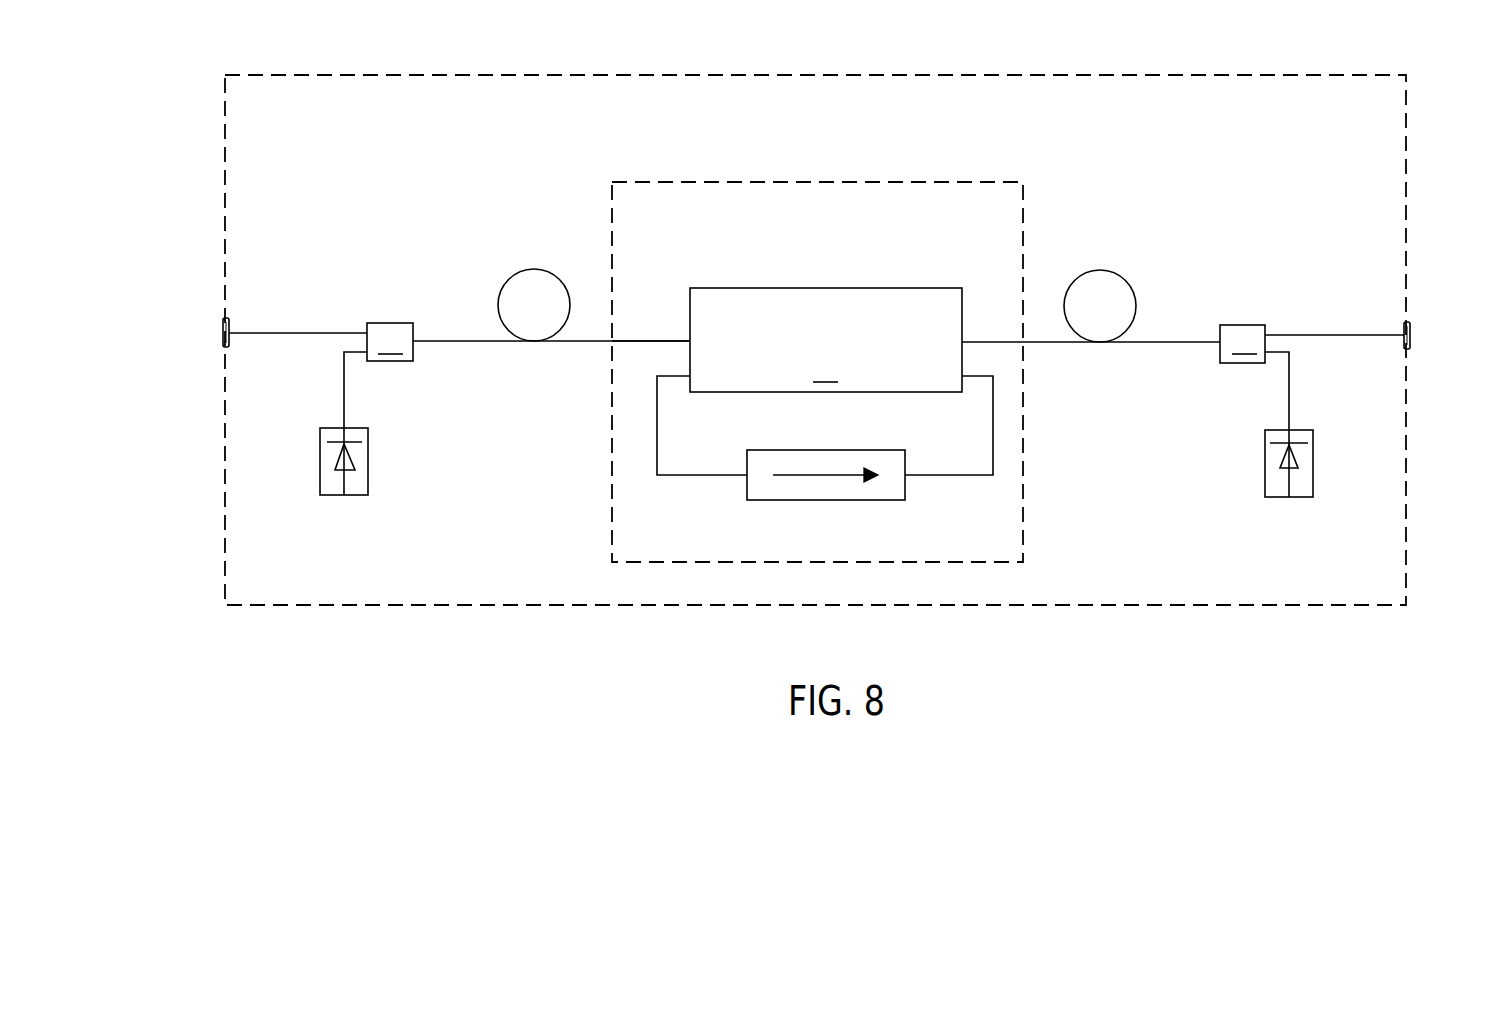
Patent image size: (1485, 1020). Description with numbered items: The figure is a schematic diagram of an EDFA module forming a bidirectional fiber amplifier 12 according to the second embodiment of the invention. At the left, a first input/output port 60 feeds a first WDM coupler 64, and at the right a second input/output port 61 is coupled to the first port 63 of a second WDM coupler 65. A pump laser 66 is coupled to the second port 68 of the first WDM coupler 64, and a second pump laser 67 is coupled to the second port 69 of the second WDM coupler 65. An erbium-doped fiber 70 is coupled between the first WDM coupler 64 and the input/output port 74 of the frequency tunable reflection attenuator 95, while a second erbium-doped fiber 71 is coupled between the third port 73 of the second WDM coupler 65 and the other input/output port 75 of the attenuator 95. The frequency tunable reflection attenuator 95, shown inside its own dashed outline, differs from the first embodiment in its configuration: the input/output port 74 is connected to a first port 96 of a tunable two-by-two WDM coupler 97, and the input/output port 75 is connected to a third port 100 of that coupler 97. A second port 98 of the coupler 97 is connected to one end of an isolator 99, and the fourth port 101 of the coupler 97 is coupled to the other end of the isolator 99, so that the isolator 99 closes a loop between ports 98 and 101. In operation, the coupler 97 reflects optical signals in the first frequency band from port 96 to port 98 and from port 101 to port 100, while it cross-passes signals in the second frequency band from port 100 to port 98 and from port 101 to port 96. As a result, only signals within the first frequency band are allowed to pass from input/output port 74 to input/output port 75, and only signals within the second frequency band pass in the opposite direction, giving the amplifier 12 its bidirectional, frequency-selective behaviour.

The bidirectional fiber amplifier 12 is at (262, 106).
The first input/output port 60 is at (222, 328).
The second input/output port 61 is at (1411, 333).
The first port of second WDM coupler 63 is at (1350, 335).
The first WDM coupler 64 is at (389, 311).
The second WDM coupler 65 is at (1244, 313).
The pump laser 66 is at (320, 440).
The pump laser 67 is at (1313, 442).
The second port of first WDM coupler 68 is at (357, 354).
The second port of second WDM coupler 69 is at (1288, 385).
The erbium-doped fiber 70 is at (508, 277).
The erbium-doped fiber 71 is at (1128, 278).
The third port of second WDM coupler 73 is at (1200, 343).
The input/output port of FTRA 74 is at (562, 342).
The input/output port of FTRA 75 is at (1072, 343).
The frequency tunable reflection attenuator 95 is at (653, 221).
The first port of tunable 2x2 WDM coupler 96 is at (633, 342).
The tunable 2x2 WDM coupler 97 is at (826, 340).
The second port of tunable 2x2 WDM coupler 98 is at (665, 376).
The isolator 99 is at (898, 500).
The third port of tunable 2x2 WDM coupler 100 is at (1008, 342).
The fourth port of tunable 2x2 WDM coupler 101 is at (988, 376).